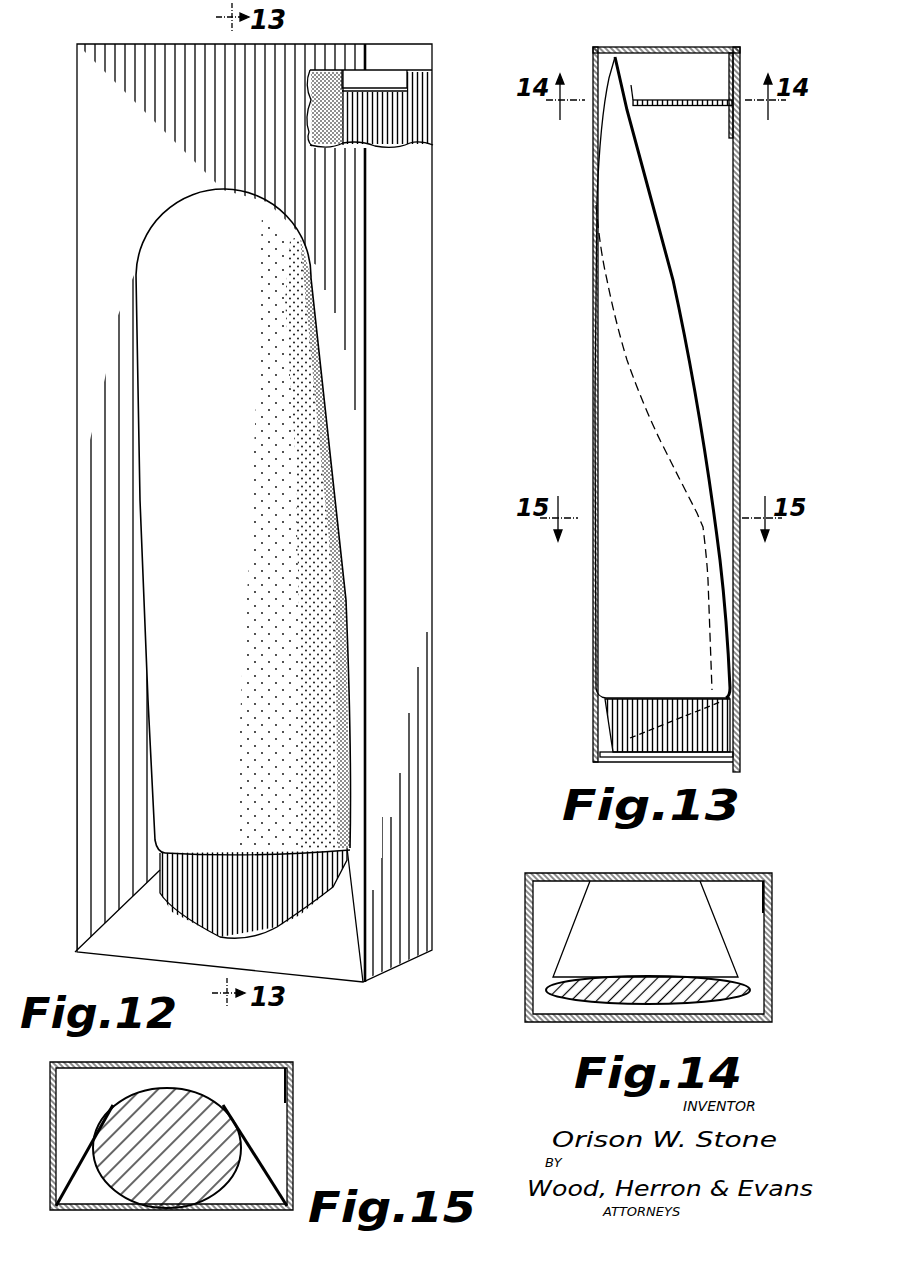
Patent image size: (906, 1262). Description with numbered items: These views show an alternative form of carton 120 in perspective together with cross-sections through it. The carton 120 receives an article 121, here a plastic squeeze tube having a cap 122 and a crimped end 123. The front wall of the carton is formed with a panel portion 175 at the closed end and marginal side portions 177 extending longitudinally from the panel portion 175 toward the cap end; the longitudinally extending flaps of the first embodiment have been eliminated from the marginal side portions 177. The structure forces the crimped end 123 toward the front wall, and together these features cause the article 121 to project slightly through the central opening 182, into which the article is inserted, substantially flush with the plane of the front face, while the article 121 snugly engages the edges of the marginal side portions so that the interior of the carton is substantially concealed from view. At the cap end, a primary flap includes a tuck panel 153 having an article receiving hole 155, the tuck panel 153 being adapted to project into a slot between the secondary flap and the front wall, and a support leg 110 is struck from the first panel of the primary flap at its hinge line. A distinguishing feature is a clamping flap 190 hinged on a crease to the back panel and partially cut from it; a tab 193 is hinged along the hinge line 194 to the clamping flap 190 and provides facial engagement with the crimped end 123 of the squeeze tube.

In FIG. 13, the support leg 110 is at (742, 768).
In FIG. 12, the carton 120 is at (444, 477).
In FIG. 13, the carton 120 is at (752, 350).
In FIG. 14, the carton 120 is at (648, 947).
In FIG. 15, the carton 120 is at (171, 1136).
In FIG. 12, the article 121 is at (243, 522).
In FIG. 14, the article 121 is at (635, 990).
In FIG. 15, the article 121 is at (175, 1200).
In FIG. 12, the cap 122 is at (280, 905).
In FIG. 13, the cap 122 is at (727, 710).
In FIG. 12, the crimped end 123 is at (333, 68).
In FIG. 13, the crimped end 123 is at (630, 50).
In FIG. 12, the tuck panel 153 is at (122, 932).
In FIG. 13, the tuck panel 153 is at (607, 752).
In FIG. 12, the article receiving hole 155 is at (158, 905).
In FIG. 12, the panel portion 175 is at (150, 118).
In FIG. 12, the marginal side portions 177 is at (353, 543).
In FIG. 15, the marginal side portions 177 is at (88, 1150).
In FIG. 12, the central opening 182 is at (328, 463).
In FIG. 12, the clamping flap 190 is at (380, 87).
In FIG. 13, the clamping flap 190 is at (697, 100).
In FIG. 14, the clamping flap 190 is at (658, 929).
In FIG. 12, the tab 193 is at (358, 77).
In FIG. 13, the tab 193 is at (634, 96).
In FIG. 14, the hinge line 194 is at (670, 976).